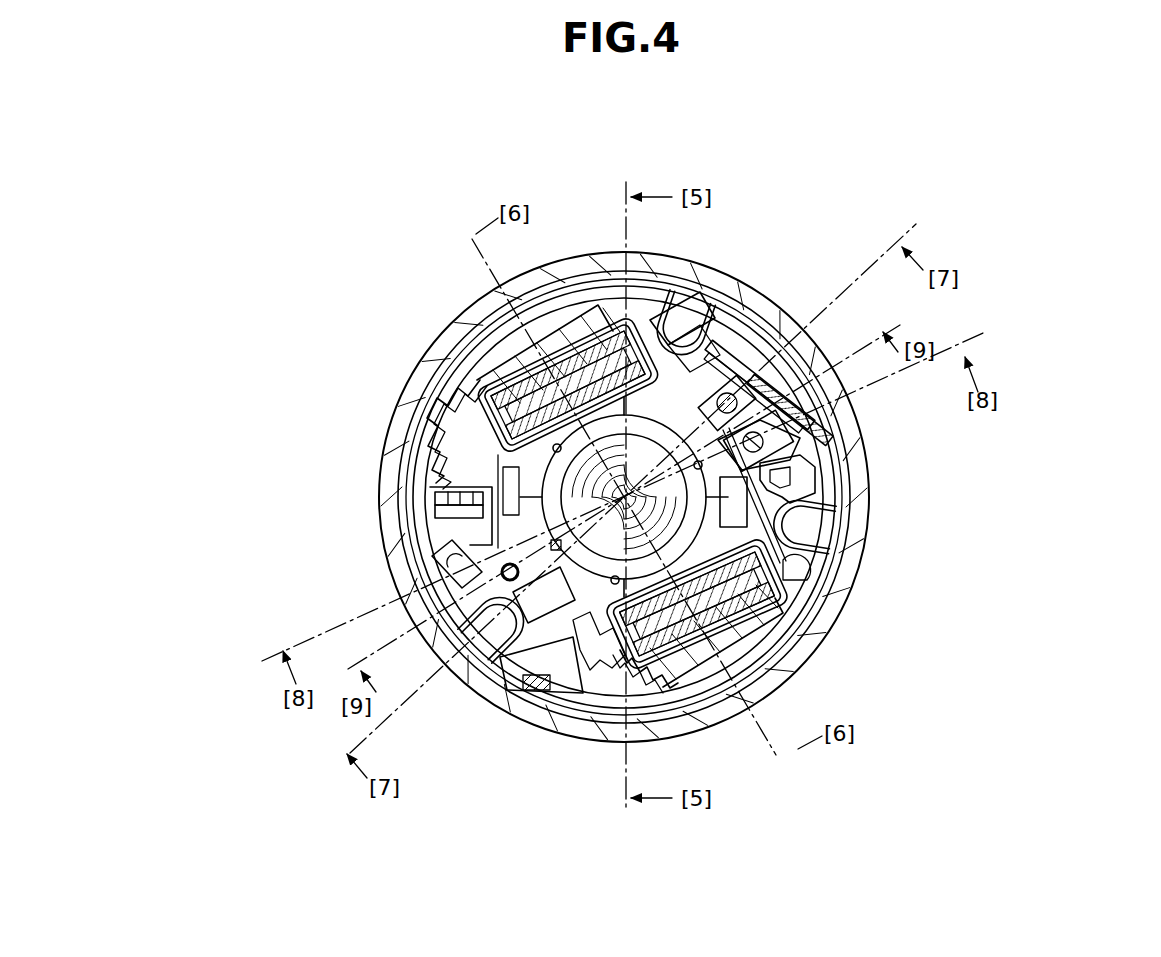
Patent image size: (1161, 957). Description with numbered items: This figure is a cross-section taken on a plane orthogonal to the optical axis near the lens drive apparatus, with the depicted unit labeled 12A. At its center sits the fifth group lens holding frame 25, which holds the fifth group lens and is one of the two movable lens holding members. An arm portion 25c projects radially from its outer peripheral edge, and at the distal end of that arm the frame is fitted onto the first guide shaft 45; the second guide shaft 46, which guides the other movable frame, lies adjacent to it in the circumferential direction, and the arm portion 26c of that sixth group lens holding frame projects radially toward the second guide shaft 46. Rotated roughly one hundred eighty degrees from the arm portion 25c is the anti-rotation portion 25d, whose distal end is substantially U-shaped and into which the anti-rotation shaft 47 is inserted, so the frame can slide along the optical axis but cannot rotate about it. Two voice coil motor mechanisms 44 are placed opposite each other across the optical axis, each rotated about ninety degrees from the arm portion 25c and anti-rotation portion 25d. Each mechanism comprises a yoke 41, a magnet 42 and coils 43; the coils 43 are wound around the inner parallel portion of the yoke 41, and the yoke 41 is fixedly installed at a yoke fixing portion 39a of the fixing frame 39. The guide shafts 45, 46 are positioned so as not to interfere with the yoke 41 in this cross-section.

The motor unit 12A is at (808, 157).
The voice coil motor mechanism 44 is at (632, 126).
The yoke 41 is at (567, 335).
The magnet 42 is at (590, 345).
The coil 43 is at (617, 350).
The fixing frame 39 is at (726, 287).
The yoke fixing portion 39a is at (490, 332).
The fifth group lens holding frame 25 is at (724, 308).
The arm portion 25c is at (768, 330).
The anti-rotation portion 25d is at (460, 512).
The first guide shaft 45 is at (790, 342).
The second guide shaft 46 is at (767, 450).
The arm portion 26c is at (760, 478).
The anti-rotation shaft 47 is at (460, 550).